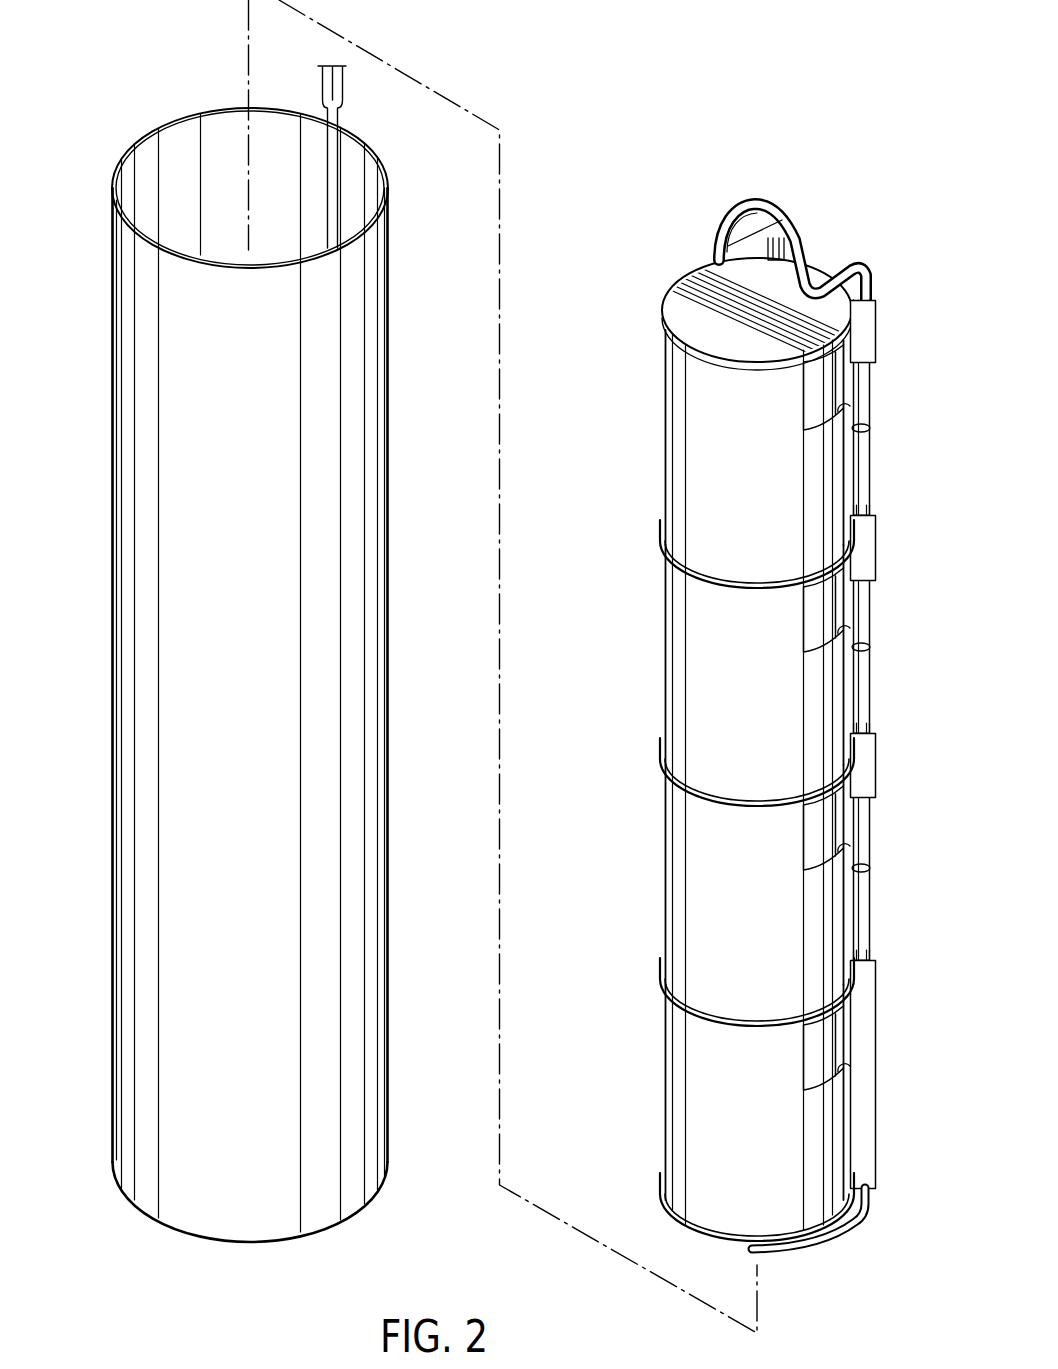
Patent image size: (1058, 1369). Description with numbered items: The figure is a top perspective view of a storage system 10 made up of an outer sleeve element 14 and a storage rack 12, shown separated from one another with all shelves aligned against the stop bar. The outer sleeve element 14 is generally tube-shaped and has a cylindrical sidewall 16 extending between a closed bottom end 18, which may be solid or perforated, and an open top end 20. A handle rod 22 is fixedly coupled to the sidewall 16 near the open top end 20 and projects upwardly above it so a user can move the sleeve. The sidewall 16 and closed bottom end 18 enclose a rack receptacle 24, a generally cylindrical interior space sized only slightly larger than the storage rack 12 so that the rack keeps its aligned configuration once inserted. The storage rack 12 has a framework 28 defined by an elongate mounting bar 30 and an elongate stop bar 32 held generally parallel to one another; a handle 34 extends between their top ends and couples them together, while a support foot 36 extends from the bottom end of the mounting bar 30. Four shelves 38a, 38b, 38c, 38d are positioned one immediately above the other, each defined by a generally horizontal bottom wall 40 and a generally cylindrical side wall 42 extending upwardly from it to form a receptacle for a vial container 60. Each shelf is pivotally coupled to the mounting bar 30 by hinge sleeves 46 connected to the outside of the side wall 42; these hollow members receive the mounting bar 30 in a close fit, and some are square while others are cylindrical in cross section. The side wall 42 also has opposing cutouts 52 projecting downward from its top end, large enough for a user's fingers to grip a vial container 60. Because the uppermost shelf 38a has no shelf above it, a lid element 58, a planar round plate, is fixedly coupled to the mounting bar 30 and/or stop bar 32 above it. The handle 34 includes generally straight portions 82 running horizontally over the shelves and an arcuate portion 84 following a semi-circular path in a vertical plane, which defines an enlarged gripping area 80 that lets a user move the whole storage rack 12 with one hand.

The storage system 10 is at (724, 126).
The storage rack 12 is at (850, 787).
The outer sleeve element 14 is at (110, 415).
The cylindrical sidewall 16 is at (250, 644).
The closed bottom end 18 is at (190, 1240).
The open top end 20 is at (138, 148).
The handle rod 22 is at (344, 100).
The rack receptacle 24 is at (216, 150).
The framework 28 is at (868, 838).
The mounting bar 30 is at (862, 397).
The stop bar 32 is at (790, 247).
The handle 34 is at (776, 224).
The support foot 36 is at (806, 1244).
The first shelf 38a is at (678, 447).
The second shelf 38b is at (678, 683).
The third shelf 38c is at (678, 901).
The fourth shelf 38d is at (678, 1125).
The bottom wall 40 is at (662, 522).
The side wall 42 is at (759, 470).
The hinge sleeve 46 is at (870, 326).
The cutout 52 is at (846, 408).
The lid element 58 is at (716, 334).
The vial container 60 is at (828, 378).
The gripping area 80 is at (768, 214).
The straight portion 82 is at (745, 241).
The arcuate portion 84 is at (728, 218).